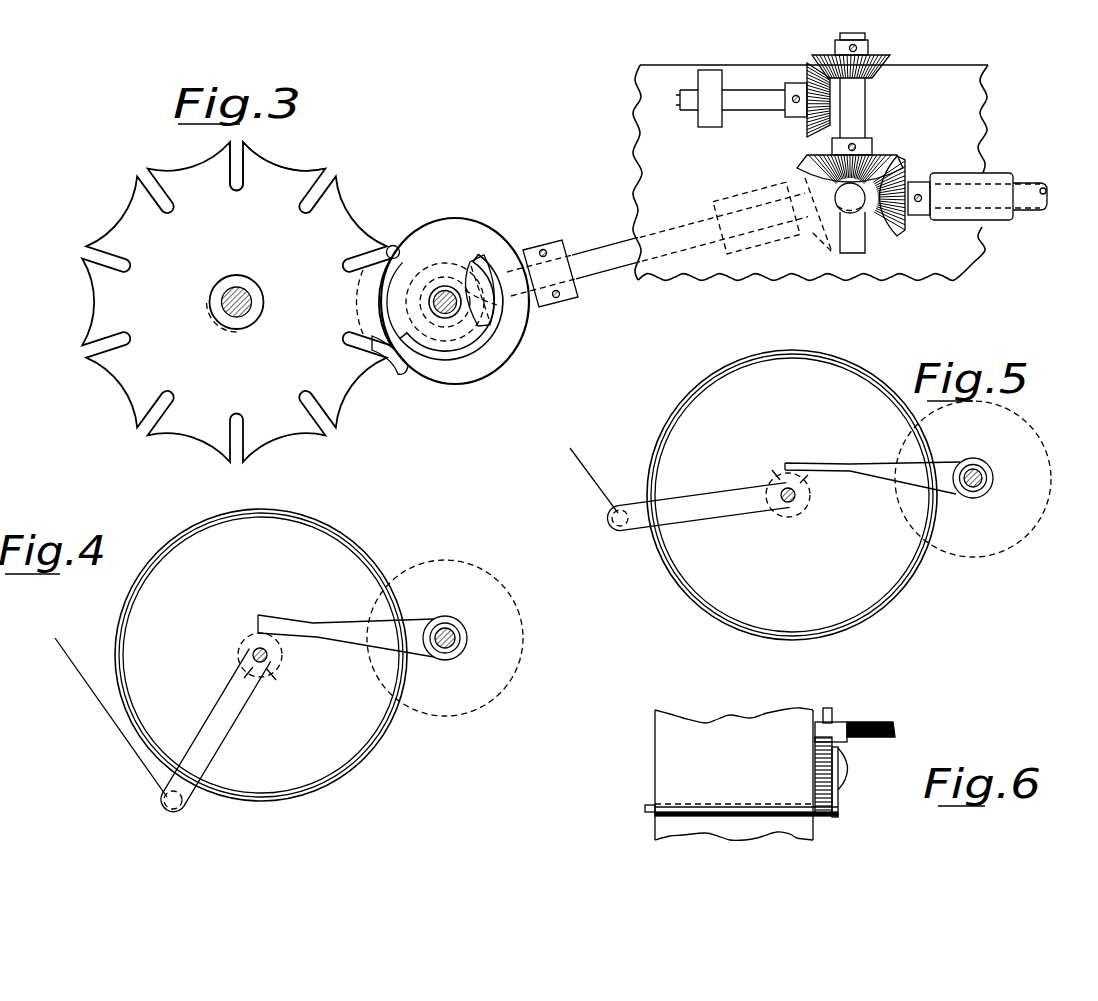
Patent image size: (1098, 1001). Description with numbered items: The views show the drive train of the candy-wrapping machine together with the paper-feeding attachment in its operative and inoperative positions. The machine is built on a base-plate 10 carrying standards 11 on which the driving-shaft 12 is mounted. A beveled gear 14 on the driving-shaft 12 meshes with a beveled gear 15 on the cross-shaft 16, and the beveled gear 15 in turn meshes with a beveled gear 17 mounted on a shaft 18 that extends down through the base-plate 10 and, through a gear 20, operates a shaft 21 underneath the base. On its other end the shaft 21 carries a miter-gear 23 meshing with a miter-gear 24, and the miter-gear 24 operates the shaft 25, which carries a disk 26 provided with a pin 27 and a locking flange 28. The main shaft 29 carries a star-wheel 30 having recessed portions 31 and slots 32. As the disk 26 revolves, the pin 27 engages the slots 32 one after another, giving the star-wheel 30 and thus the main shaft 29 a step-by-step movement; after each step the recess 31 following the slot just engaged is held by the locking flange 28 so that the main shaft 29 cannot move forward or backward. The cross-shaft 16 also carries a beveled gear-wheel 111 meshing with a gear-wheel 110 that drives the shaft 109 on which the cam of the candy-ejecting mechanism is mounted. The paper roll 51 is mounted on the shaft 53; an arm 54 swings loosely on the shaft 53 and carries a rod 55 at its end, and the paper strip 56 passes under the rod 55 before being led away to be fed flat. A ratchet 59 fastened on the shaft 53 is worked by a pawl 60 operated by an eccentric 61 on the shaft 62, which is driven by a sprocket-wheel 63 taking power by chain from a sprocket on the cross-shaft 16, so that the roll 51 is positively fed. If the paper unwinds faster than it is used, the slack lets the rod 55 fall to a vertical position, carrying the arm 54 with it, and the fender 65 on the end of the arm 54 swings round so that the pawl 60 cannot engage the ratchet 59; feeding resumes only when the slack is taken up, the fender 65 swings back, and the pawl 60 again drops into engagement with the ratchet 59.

In FIG. 3, the base-plate 10 is at (950, 255).
In FIG. 3, the standards 11 is at (1001, 215).
In FIG. 3, the driving-shaft 12 is at (1040, 185).
In FIG. 3, the beveled gear 14 is at (905, 168).
In FIG. 3, the beveled gear 15 is at (885, 156).
In FIG. 3, the cross-shaft 16 is at (866, 108).
In FIG. 3, the beveled gear 17 is at (900, 226).
In FIG. 3, the shaft 18 is at (840, 210).
In FIG. 3, the gear 20 is at (806, 173).
In FIG. 3, the shaft 21 is at (598, 256).
In FIG. 3, the miter-gear 23 is at (466, 266).
In FIG. 3, the miter-gear 24 is at (450, 262).
In FIG. 3, the shaft 25 is at (443, 290).
In FIG. 3, the disk 26 is at (497, 251).
In FIG. 3, the pin 27 is at (392, 245).
In FIG. 3, the locking flange 28 is at (458, 363).
In FIG. 3, the main shaft 29 is at (252, 305).
In FIG. 3, the star-wheel 30 is at (305, 178).
In FIG. 3, the recessed portions 31 is at (268, 162).
In FIG. 3, the slots 32 is at (243, 148).
In FIG. 3, the shaft 109 is at (760, 92).
In FIG. 3, the gear-wheel 110 is at (810, 126).
In FIG. 3, the beveled gear-wheel 111 is at (816, 62).
In FIG. 4, the roll 51 is at (345, 546).
In FIG. 5, the roll 51 is at (829, 622).
In FIG. 6, the roll 51 is at (668, 825).
In FIG. 4, the shaft 53 is at (252, 652).
In FIG. 5, the shaft 53 is at (787, 506).
In FIG. 4, the arm 54 is at (229, 698).
In FIG. 5, the arm 54 is at (713, 512).
In FIG. 6, the arm 54 is at (839, 797).
In FIG. 4, the rod 55 is at (188, 804).
In FIG. 5, the rod 55 is at (622, 526).
In FIG. 6, the rod 55 is at (645, 807).
In FIG. 4, the paper strip 56 is at (149, 770).
In FIG. 5, the paper strip 56 is at (592, 485).
In FIG. 6, the paper strip 56 is at (668, 762).
In FIG. 4, the ratchet 59 is at (279, 665).
In FIG. 5, the ratchet 59 is at (781, 481).
In FIG. 6, the ratchet 59 is at (835, 761).
In FIG. 4, the pawl 60 is at (259, 616).
In FIG. 5, the pawl 60 is at (784, 466).
In FIG. 6, the pawl 60 is at (841, 741).
In FIG. 4, the eccentric 61 is at (456, 655).
In FIG. 5, the eccentric 61 is at (982, 469).
In FIG. 6, the eccentric 61 is at (831, 708).
In FIG. 4, the shaft 62 is at (448, 630).
In FIG. 5, the shaft 62 is at (990, 481).
In FIG. 6, the shaft 62 is at (876, 722).
In FIG. 4, the sprocket-wheel 63 is at (523, 615).
In FIG. 5, the sprocket-wheel 63 is at (1051, 486).
In FIG. 4, the fender 65 is at (281, 641).
In FIG. 5, the fender 65 is at (812, 503).